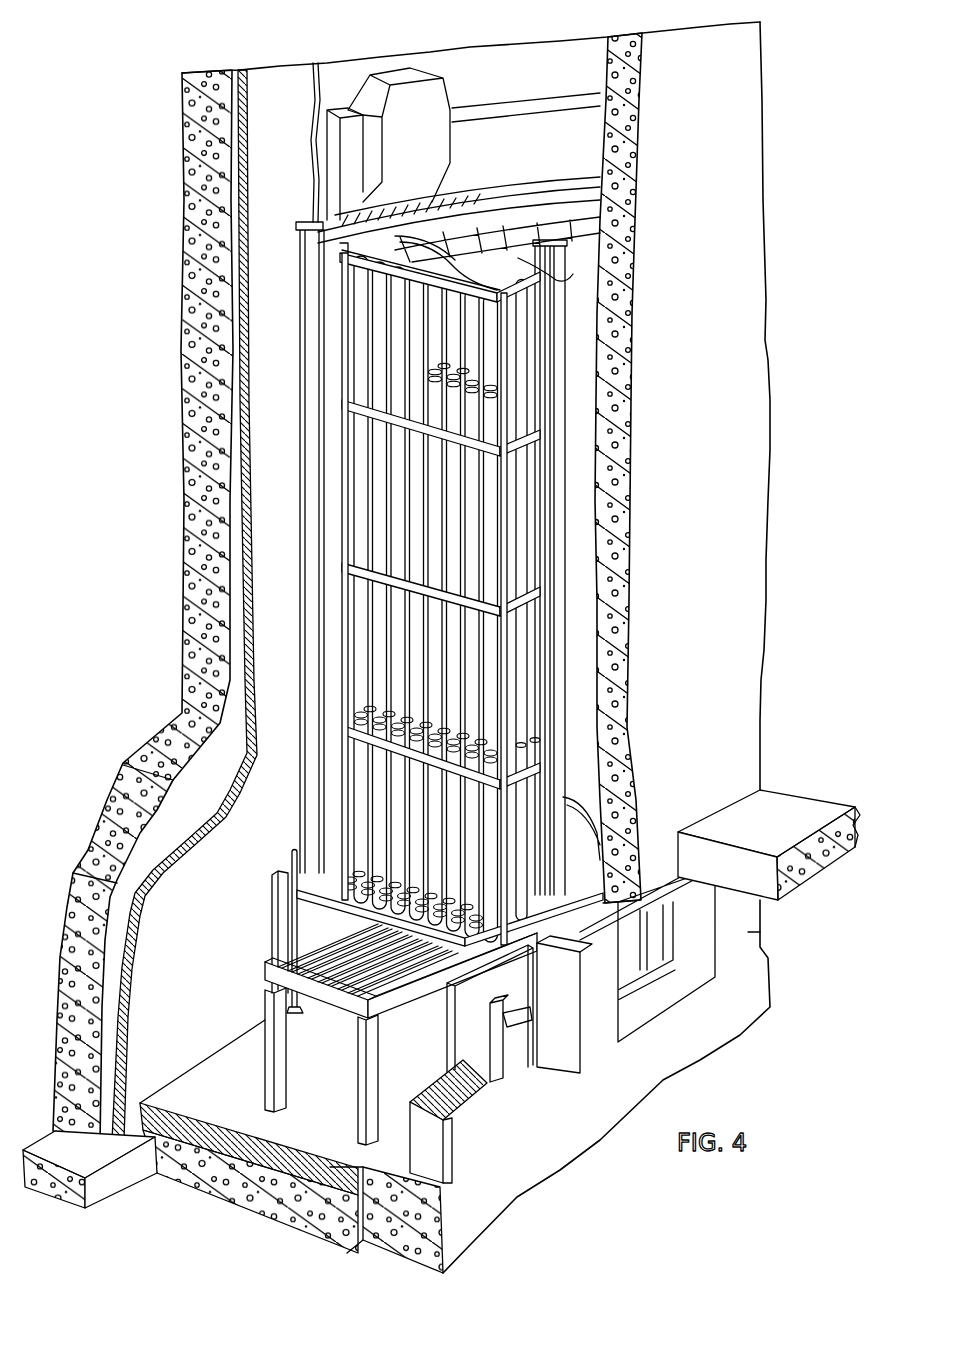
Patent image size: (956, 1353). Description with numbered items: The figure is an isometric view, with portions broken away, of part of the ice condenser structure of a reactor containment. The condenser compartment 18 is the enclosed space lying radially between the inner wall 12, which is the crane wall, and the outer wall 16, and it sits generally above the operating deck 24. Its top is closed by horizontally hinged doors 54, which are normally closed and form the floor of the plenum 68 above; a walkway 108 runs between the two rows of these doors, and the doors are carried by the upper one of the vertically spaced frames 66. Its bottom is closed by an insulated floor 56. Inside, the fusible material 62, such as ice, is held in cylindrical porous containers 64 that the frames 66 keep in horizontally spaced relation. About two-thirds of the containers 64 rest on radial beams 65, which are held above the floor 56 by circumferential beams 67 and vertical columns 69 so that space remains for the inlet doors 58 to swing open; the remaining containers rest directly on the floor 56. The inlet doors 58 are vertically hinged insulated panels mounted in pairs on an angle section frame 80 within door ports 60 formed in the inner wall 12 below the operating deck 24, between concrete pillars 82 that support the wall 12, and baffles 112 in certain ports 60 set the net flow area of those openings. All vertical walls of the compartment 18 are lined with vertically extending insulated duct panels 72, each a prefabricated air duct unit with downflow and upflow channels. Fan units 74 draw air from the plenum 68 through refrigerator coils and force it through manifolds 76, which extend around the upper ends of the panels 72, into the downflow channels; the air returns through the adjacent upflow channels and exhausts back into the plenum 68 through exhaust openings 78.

The inner wall 12 is at (752, 678).
The outer wall 16 is at (180, 724).
The condenser compartment 18 is at (340, 1069).
The operating deck 24 is at (797, 805).
The horizontally hinged doors 54 is at (487, 233).
The insulated floor 56 is at (218, 1152).
The inlet doors 58 is at (470, 1033).
The door ports 60 is at (549, 1075).
The fusible material 62 is at (435, 594).
The cylindrical porous containers 64 is at (333, 803).
The radial beams 65 is at (336, 996).
The vertically spaced frames 66 is at (340, 563).
The circumferential beams 67 is at (263, 972).
The plenum 68 is at (533, 77).
The vertical columns 69 is at (263, 1013).
The insulated duct panels 72 is at (300, 349).
The fan units 74 is at (440, 86).
The manifolds 76 is at (564, 98).
The exhaust openings 78 is at (396, 198).
The angle section frame 80 is at (514, 1062).
The concrete pillars 82 is at (748, 932).
The walkway 108 is at (530, 240).
The baffles 112 is at (510, 1053).